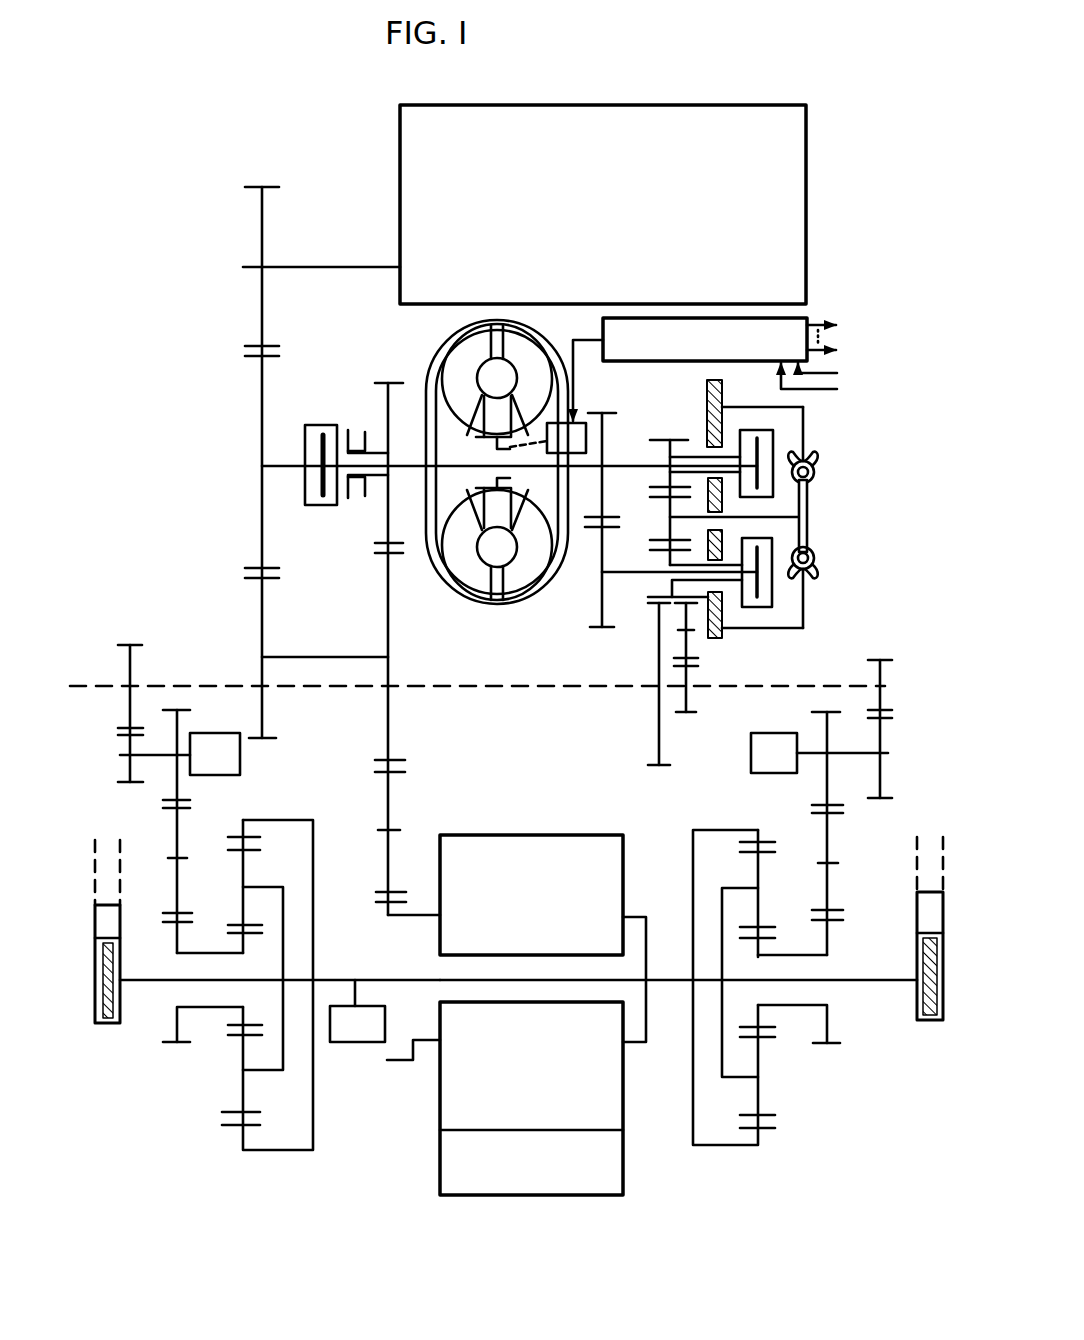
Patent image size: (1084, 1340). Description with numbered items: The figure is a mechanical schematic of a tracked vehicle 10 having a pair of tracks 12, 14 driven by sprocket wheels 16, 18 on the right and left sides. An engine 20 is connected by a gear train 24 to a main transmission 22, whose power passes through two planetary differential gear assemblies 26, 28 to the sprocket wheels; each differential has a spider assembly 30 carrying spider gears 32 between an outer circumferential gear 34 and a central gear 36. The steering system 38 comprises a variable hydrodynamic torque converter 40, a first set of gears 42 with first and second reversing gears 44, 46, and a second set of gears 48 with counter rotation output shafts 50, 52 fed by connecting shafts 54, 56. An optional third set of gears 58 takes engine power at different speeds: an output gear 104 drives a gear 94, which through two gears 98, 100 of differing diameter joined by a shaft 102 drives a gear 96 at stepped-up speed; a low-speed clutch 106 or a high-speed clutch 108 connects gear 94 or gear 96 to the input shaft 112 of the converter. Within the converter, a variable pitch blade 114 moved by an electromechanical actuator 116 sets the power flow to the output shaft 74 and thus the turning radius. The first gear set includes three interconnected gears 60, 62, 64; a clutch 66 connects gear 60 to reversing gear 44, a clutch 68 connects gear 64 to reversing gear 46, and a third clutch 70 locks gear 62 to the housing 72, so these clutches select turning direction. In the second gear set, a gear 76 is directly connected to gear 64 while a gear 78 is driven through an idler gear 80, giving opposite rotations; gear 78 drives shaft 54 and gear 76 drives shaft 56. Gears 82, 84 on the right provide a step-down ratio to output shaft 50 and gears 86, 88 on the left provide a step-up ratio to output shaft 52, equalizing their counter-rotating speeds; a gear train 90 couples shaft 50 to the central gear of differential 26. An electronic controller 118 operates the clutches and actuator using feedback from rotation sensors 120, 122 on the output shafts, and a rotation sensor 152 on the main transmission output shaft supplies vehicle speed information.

The tracked vehicle 10 is at (163, 196).
The track 12 is at (915, 1005).
The track 14 is at (120, 1008).
The sprocket wheel 16 is at (925, 953).
The sprocket wheel 18 is at (112, 938).
The engine 20 is at (806, 187).
The main transmission 22 is at (502, 835).
The gear train 24 is at (398, 657).
The differential gear assembly 26 is at (735, 826).
The differential gear assembly 28 is at (278, 818).
The spider assembly 30 is at (258, 1070).
The spider gears 32 is at (235, 1112).
The outer circumferential gear 34 is at (233, 1126).
The central gear 36 is at (238, 1038).
The steering system 38 is at (208, 548).
The variable hydrodynamic torque converter 40 is at (437, 345).
The first set of gears 42 is at (626, 423).
The first reversing gear 44 is at (600, 528).
The second reversing gear 46 is at (598, 627).
The second set of gears 48 is at (640, 677).
The counter rotation output shaft 50 is at (873, 752).
The counter rotation output shaft 52 is at (163, 757).
The connecting shaft 54 is at (778, 684).
The connecting shaft 56 is at (495, 692).
The third set of gears 58 is at (243, 645).
The gear 60 is at (653, 440).
The gear 62 is at (660, 500).
The gear 64 is at (650, 597).
The clutch 66 is at (775, 447).
The clutch 68 is at (775, 598).
The third clutch 70 is at (822, 547).
The housing 72 is at (724, 638).
The output shaft 74 is at (555, 466).
The gear 76 is at (655, 766).
The gear 78 is at (690, 712).
The idler gear 80 is at (692, 657).
The gear 82 is at (882, 660).
The gear 84 is at (882, 798).
The gear 86 is at (125, 645).
The gear 88 is at (125, 728).
The gear train 90 is at (836, 847).
The gear 94 is at (265, 346).
The gear 96 is at (395, 383).
The gear 98 is at (272, 580).
The gear 100 is at (383, 556).
The shaft 102 is at (316, 657).
The output gear 104 is at (265, 187).
The clutch 106 is at (307, 450).
The clutch 108 is at (362, 430).
The input shaft 112 is at (408, 472).
The variable pitch blade 114 is at (492, 500).
The electromechanical actuator 116 is at (571, 418).
The electronic controller 118 is at (810, 318).
The rotation sensor 120 is at (760, 733).
The rotation sensor 122 is at (198, 733).
The rotation sensor 152 is at (352, 1043).